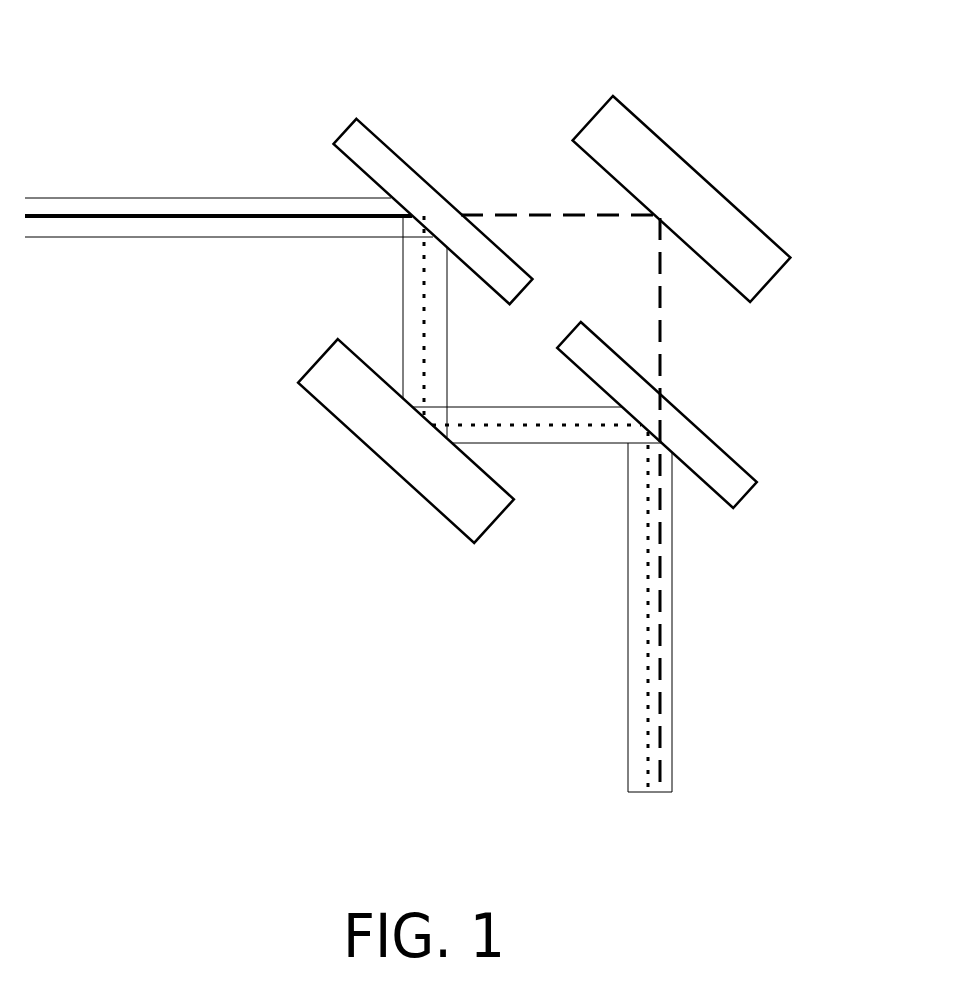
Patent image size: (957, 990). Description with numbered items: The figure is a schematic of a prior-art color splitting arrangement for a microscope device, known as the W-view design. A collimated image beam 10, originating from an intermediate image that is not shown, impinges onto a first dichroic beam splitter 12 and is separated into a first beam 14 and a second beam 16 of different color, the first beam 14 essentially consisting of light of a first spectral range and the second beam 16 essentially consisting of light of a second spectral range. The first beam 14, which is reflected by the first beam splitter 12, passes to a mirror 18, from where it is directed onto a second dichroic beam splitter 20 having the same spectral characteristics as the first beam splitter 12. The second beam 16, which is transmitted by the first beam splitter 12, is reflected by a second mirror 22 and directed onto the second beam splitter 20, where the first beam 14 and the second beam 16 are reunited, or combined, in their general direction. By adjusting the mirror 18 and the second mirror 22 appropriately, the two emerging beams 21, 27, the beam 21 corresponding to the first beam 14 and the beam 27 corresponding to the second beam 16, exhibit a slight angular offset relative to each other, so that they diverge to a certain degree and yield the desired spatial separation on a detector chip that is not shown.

The collimated image beam 10 is at (130, 216).
The first dichroic beam splitter 12 is at (378, 147).
The first beam 14 is at (424, 303).
The second beam 16 is at (537, 215).
The mirror 18 is at (390, 437).
The second dichroic beam splitter 20 is at (713, 458).
The beam corresponding to the first beam 21 is at (648, 715).
The second mirror 22 is at (668, 175).
The beam corresponding to the second beam 27 is at (663, 680).